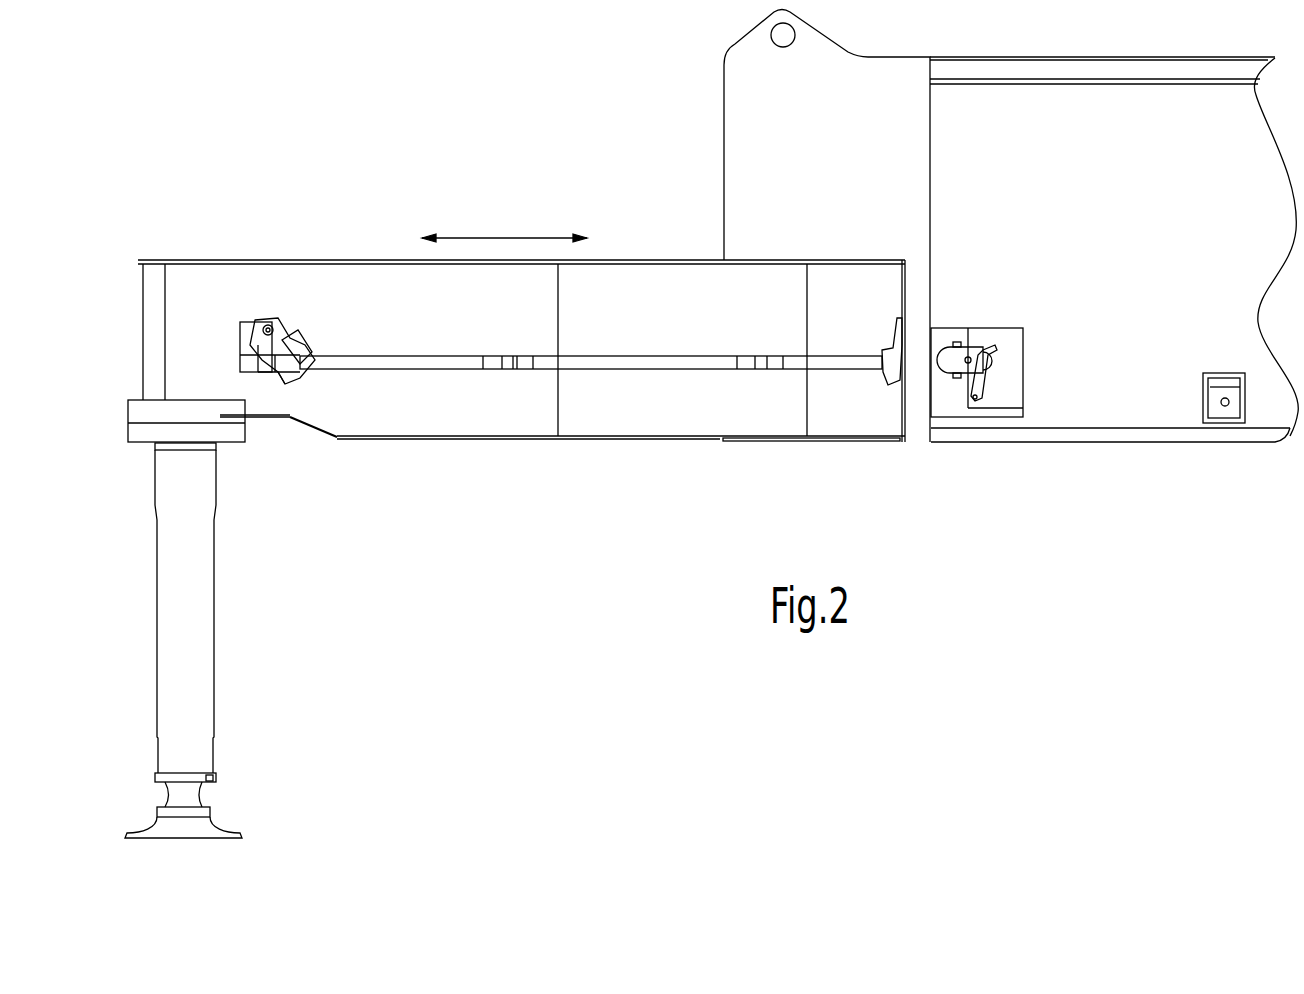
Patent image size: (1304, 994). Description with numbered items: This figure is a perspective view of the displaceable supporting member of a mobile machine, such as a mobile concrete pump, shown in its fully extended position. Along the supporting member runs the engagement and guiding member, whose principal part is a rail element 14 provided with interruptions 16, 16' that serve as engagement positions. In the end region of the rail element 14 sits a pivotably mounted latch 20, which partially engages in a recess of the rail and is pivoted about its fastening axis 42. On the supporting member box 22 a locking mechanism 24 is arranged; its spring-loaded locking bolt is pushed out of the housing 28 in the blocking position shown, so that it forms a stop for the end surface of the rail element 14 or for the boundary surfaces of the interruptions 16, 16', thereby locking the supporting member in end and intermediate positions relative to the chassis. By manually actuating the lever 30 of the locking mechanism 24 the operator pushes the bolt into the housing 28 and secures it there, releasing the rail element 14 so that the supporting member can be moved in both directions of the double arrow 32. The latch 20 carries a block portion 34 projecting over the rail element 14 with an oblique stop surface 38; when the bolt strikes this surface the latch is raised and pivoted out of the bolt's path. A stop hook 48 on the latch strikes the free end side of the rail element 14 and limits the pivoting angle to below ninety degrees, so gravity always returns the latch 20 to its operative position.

The rail element 14 is at (400, 365).
The interruption 16 is at (514, 328).
The interruption 16' is at (769, 328).
The latch 20 is at (285, 340).
The supporting member box 22 is at (1163, 388).
The locking mechanism 24 is at (985, 336).
The housing 28 is at (948, 359).
The lever 30 is at (985, 368).
The double arrow 32 is at (488, 236).
The block portion 34 is at (305, 350).
The oblique stop surface 38 is at (280, 386).
The fastening axis 42 is at (268, 325).
The stop hook 48 is at (240, 338).